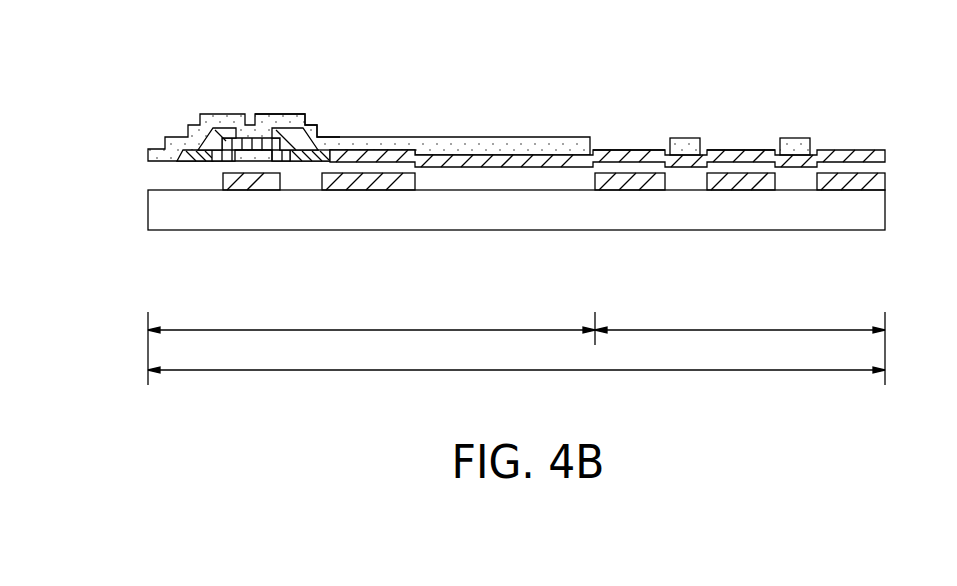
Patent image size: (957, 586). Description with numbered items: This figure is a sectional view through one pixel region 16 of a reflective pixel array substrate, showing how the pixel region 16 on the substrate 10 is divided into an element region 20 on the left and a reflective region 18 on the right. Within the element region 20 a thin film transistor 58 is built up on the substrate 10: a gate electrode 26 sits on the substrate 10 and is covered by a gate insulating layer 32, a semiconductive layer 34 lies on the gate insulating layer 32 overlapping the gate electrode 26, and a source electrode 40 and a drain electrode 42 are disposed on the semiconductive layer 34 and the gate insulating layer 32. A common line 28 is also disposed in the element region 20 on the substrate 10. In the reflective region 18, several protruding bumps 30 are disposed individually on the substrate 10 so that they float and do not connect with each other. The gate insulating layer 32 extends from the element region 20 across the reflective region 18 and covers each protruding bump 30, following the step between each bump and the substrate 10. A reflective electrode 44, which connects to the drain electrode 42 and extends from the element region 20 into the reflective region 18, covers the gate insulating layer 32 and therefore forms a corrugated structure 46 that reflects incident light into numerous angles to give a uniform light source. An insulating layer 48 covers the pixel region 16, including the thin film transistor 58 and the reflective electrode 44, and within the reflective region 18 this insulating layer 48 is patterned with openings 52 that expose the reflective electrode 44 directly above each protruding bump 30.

The substrate 10 is at (181, 225).
The pixel region 16 is at (516, 356).
The reflective region 18 is at (740, 341).
The element region 20 is at (371, 341).
The gate electrode 26 is at (246, 180).
The common line 28 is at (368, 180).
The protruding bump 30 is at (642, 180).
The gate insulating layer 32 is at (885, 165).
The semiconductive layer 34 is at (200, 152).
The source electrode 40 is at (222, 130).
The drain electrode 42 is at (292, 133).
The reflective electrode 44 is at (885, 151).
The corrugated structure 46 is at (763, 123).
The insulating layer 48 is at (300, 116).
The opening 52 is at (632, 143).
The thin film transistor 58 is at (300, 93).